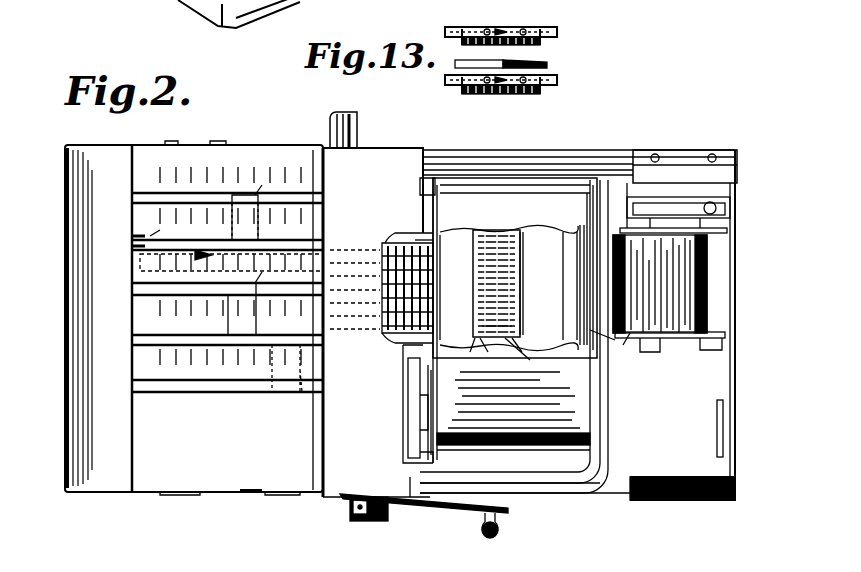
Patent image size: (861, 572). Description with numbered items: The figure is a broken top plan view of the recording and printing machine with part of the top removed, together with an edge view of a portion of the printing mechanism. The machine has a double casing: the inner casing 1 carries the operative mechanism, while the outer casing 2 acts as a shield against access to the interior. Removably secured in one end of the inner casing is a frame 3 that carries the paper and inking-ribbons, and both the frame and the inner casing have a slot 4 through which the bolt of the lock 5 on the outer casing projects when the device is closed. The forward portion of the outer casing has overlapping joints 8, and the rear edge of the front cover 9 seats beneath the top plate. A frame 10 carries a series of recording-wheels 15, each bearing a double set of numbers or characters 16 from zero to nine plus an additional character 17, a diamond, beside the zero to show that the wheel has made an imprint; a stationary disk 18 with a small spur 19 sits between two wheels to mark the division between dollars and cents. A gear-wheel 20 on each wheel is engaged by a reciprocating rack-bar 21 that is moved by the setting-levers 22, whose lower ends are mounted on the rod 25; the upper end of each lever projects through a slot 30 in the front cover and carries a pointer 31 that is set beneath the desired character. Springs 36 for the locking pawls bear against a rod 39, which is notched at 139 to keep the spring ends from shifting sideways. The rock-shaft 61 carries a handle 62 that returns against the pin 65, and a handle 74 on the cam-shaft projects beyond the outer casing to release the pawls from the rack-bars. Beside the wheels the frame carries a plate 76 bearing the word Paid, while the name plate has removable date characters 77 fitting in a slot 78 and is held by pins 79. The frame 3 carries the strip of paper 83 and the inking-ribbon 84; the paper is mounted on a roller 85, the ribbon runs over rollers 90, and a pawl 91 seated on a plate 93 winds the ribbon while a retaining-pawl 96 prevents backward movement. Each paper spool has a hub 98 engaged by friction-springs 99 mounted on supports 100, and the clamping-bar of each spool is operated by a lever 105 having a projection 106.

In FIG. 2, the inner casing 1 is at (585, 160).
In FIG. 2, the outer casing 2 is at (532, 150).
In FIG. 2, the frame 3 is at (65, 474).
In FIG. 2, the slot 4 is at (723, 421).
In FIG. 2, the lock 5 is at (735, 483).
In FIG. 2, the overlapping joints 8 is at (210, 493).
In FIG. 2, the front cover 9 is at (250, 490).
In FIG. 2, the frame 10 is at (482, 240).
In FIG. 13, the recording-wheels 15 is at (558, 33).
In FIG. 2, the recording-wheels 15 is at (492, 235).
In FIG. 13, the numbers or characters 16 is at (528, 30).
In FIG. 2, the numbers or characters 16 is at (485, 330).
In FIG. 13, the additional character 17 is at (500, 30).
In FIG. 2, the additional character 17 is at (520, 340).
In FIG. 13, the stationary disk 18 is at (548, 64).
In FIG. 2, the stationary disk 18 is at (475, 340).
In FIG. 13, the spur 19 is at (503, 63).
In FIG. 13, the gear-wheel 20 is at (463, 42).
In FIG. 2, the gear-wheel 20 is at (518, 345).
In FIG. 2, the rack-bar 21 is at (380, 250).
In FIG. 2, the setting-levers 22 is at (276, 393).
In FIG. 2, the rod 25 is at (545, 240).
In FIG. 2, the slot 30 is at (228, 274).
In FIG. 2, the pointer 31 is at (252, 195).
In FIG. 2, the springs 36 is at (392, 328).
In FIG. 2, the rod 39 is at (420, 243).
In FIG. 2, the rock-shaft 61 is at (382, 520).
In FIG. 2, the handle 62 is at (482, 533).
In FIG. 2, the pin 65 is at (432, 510).
In FIG. 2, the handle 74 is at (357, 132).
In FIG. 2, the plate 76 is at (450, 240).
In FIG. 2, the date characters 77 is at (575, 240).
In FIG. 2, the slot 78 is at (565, 225).
In FIG. 2, the pins 79 is at (512, 240).
In FIG. 2, the strip of paper 83 is at (669, 284).
In FIG. 2, the inking-ribbon 84 is at (513, 419).
In FIG. 2, the paper roller 85 is at (715, 332).
In FIG. 2, the rollers 90 is at (420, 184).
In FIG. 2, the pawl 91 is at (430, 414).
In FIG. 2, the plate 93 is at (420, 400).
In FIG. 2, the retaining-pawl 96 is at (422, 458).
In FIG. 2, the hub 98 is at (667, 230).
In FIG. 2, the friction-springs 99 is at (670, 212).
In FIG. 2, the supports 100 is at (720, 193).
In FIG. 2, the lever 105 is at (705, 347).
In FIG. 2, the projection 106 is at (650, 352).
In FIG. 2, the notch 139 is at (393, 243).